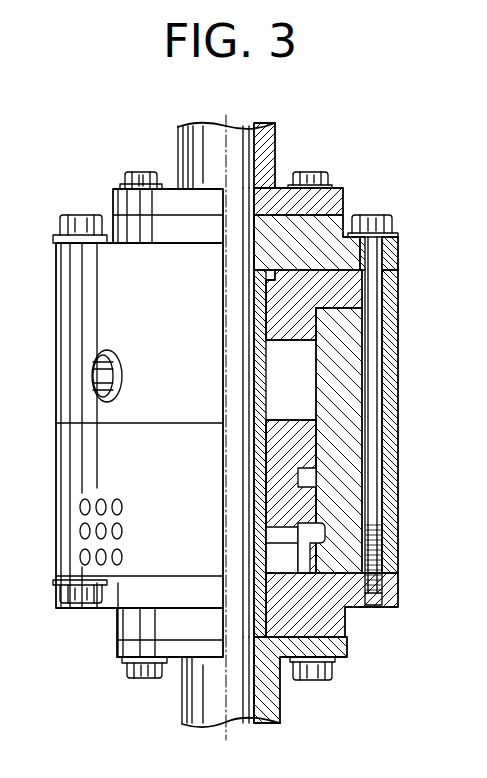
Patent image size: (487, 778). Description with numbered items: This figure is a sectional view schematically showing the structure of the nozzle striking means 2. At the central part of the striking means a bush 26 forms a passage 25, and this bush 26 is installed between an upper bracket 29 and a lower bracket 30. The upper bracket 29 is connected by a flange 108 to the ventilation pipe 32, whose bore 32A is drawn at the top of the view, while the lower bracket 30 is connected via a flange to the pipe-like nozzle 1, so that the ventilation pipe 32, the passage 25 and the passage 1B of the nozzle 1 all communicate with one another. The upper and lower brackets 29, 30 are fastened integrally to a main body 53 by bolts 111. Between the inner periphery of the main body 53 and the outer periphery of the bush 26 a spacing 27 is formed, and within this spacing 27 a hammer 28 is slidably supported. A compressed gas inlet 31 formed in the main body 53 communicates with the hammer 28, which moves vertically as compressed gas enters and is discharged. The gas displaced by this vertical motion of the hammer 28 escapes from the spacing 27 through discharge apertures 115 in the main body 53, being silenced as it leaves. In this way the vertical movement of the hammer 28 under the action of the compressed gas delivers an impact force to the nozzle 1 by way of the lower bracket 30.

The nozzle 1 is at (278, 688).
The passage of the nozzle 1B is at (242, 719).
The nozzle striking means 2 is at (458, 423).
The passage 25 is at (240, 322).
The bush 26 is at (262, 383).
The spacing 27 is at (302, 365).
The hammer 28 is at (282, 465).
The upper bracket 29 is at (326, 228).
The lower bracket 30 is at (323, 620).
The compressed gas inlet 31 is at (100, 383).
The ventilation pipe 32 is at (277, 146).
The shaft bore 32A is at (252, 132).
The main body 53 is at (390, 483).
The flange 108 is at (392, 253).
The bolts 111 is at (372, 517).
The discharge apertures 115 is at (85, 533).